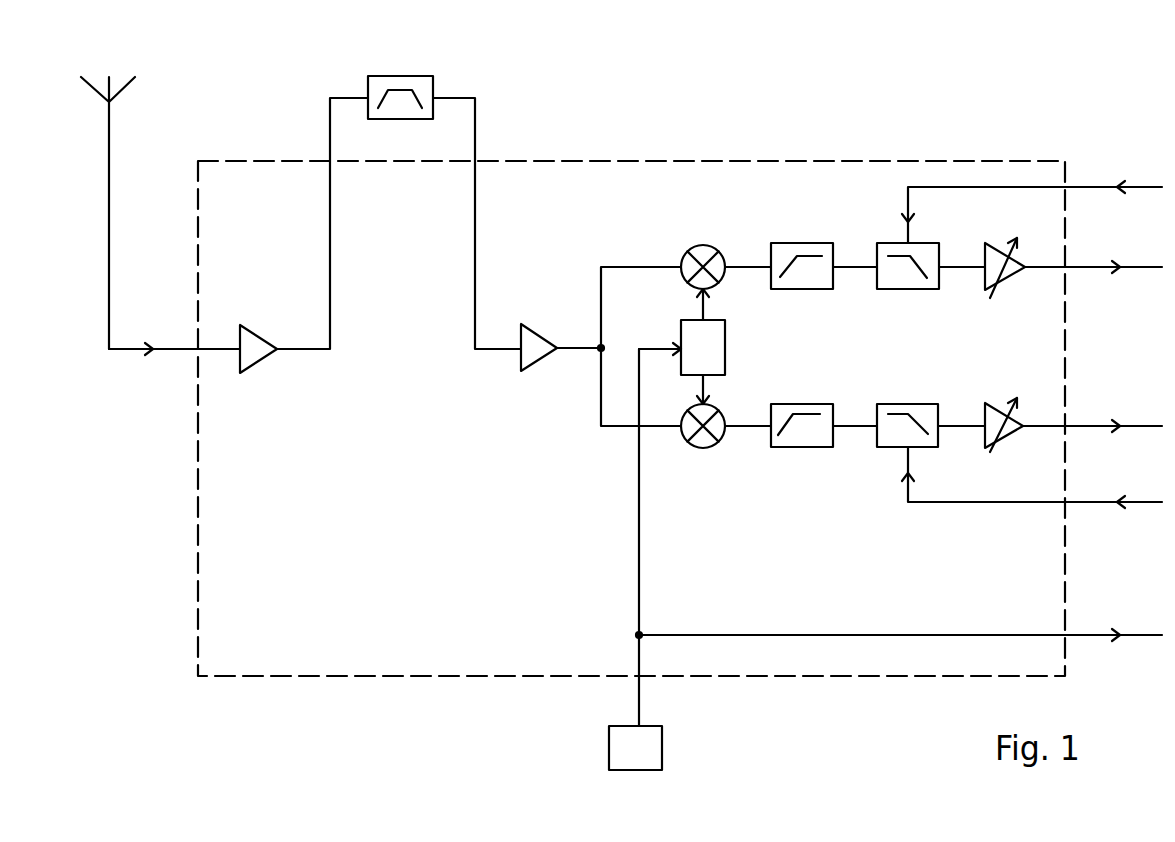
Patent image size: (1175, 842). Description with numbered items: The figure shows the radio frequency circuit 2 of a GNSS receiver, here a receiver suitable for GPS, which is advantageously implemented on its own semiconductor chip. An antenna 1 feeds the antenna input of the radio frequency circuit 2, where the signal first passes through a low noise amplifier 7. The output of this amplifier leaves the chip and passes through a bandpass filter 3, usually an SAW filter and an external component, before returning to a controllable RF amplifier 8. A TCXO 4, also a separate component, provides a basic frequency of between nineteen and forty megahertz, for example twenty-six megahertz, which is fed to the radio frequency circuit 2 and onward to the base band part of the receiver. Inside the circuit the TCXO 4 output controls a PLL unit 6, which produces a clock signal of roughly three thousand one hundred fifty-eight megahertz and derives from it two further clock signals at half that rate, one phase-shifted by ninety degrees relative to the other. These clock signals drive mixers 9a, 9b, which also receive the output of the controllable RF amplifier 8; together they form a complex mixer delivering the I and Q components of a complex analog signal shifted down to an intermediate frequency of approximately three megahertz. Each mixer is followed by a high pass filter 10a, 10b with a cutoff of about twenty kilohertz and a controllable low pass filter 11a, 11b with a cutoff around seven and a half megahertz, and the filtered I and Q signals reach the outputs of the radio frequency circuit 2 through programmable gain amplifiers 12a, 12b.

The antenna 1 is at (118, 83).
The radio frequency circuit 2 is at (239, 685).
The bandpass filter 3 is at (415, 85).
The TCXO 4 is at (662, 745).
The PLL unit 6 is at (725, 342).
The low noise amplifier 7 is at (257, 352).
The controllable RF amplifier 8 is at (538, 352).
The mixer 9a is at (705, 252).
The mixer 9b is at (705, 440).
The high pass filter 10a is at (800, 252).
The high pass filter 10b is at (801, 438).
The controllable low pass filter 11a is at (932, 250).
The controllable low pass filter 11b is at (915, 440).
The programmable gain amplifier 12a is at (993, 250).
The programmable gain amplifier 12b is at (1010, 435).